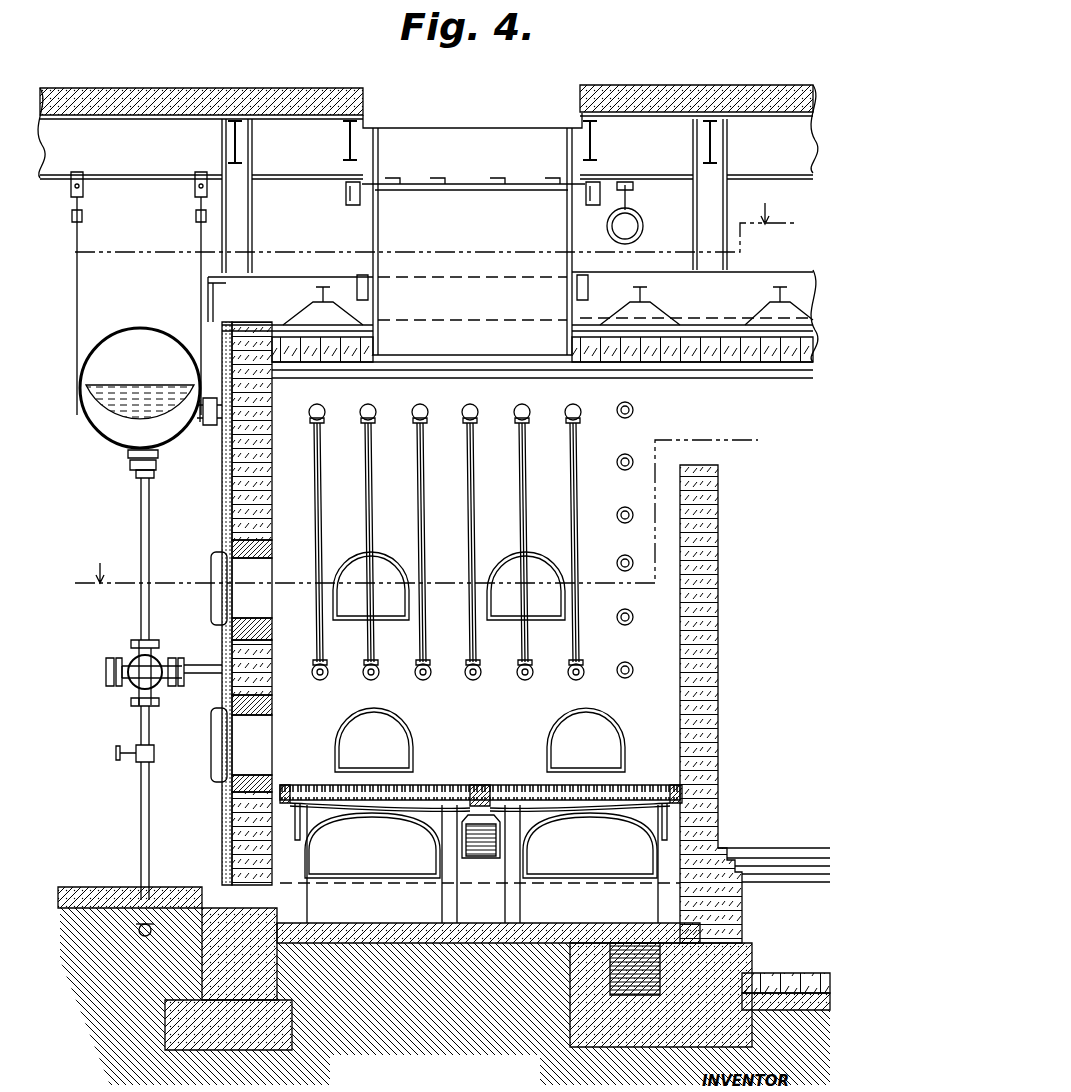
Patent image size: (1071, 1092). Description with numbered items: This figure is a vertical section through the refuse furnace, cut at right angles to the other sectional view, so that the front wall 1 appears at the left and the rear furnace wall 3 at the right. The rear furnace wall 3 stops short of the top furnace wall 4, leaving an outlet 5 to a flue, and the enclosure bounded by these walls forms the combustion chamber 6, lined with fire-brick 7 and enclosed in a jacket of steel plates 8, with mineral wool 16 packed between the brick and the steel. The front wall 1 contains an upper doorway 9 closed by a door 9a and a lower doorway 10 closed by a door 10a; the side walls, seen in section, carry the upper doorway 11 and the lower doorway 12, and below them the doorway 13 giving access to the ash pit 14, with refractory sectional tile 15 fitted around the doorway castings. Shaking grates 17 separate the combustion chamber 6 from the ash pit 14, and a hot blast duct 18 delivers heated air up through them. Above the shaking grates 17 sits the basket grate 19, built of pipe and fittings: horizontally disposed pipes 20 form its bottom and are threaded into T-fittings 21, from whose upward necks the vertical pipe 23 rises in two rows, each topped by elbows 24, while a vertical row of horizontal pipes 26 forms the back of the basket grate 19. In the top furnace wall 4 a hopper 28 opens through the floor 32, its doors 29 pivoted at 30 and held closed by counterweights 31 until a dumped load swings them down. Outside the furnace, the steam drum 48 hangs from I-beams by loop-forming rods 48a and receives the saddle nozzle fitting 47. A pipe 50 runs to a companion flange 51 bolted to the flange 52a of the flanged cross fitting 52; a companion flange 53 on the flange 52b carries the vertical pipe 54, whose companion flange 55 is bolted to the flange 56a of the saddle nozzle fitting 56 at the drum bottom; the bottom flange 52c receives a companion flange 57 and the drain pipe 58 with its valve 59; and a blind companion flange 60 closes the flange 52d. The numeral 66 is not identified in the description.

The front wall 1 is at (230, 514).
The rear furnace wall 3 is at (718, 580).
The top furnace wall 4 is at (345, 360).
The outlet 5 is at (703, 425).
The combustion chamber 6 is at (417, 519).
The fire-brick 7 is at (305, 372).
The jacket of steel plates 8 is at (230, 538).
The upper doorway 9 is at (250, 602).
The door 9a is at (212, 584).
The lower doorway 10 is at (252, 745).
The door 10a is at (212, 752).
The upper doorway 11 is at (358, 572).
The lower doorway 12 is at (395, 742).
The doorway 13 is at (410, 840).
The ash pit 14 is at (444, 984).
The refractory sectional tile 15 is at (272, 548).
The mineral wool 16 is at (222, 467).
The shaking grates 17 is at (515, 784).
The hot blast duct 18 is at (496, 852).
The basket grate 19 is at (468, 626).
The horizontally disposed pipes 20 is at (366, 680).
The T-fittings 21 is at (366, 666).
The vertical pipe 23 is at (365, 496).
The elbows 24 is at (362, 406).
The pipes 26 is at (624, 454).
The hopper 28 is at (500, 148).
The doors 29 is at (455, 191).
The pivot 30 is at (348, 186).
The counterweights 31 is at (643, 226).
The floor 32 is at (96, 92).
The saddle nozzle fitting 47 is at (205, 428).
The steam drum 48 is at (152, 332).
The loop-forming rods 48a is at (78, 307).
The pipe 50 is at (204, 665).
The companion flange 51 is at (176, 660).
The flanged cross fitting 52 is at (158, 683).
The flange 52a is at (172, 657).
The flange 52b is at (134, 648).
The bottom flange 52c is at (132, 700).
The flange 52d is at (120, 666).
The companion flange 53 is at (137, 645).
The vertical pipe 54 is at (140, 512).
The companion flange 55 is at (155, 476).
The saddle nozzle fitting 56 is at (126, 453).
The flange 56a is at (128, 466).
The companion flange 57 is at (131, 703).
The drain pipe 58 is at (141, 735).
The valve 59 is at (136, 765).
The blind companion flange 60 is at (106, 677).
The plug 66 is at (110, 682).